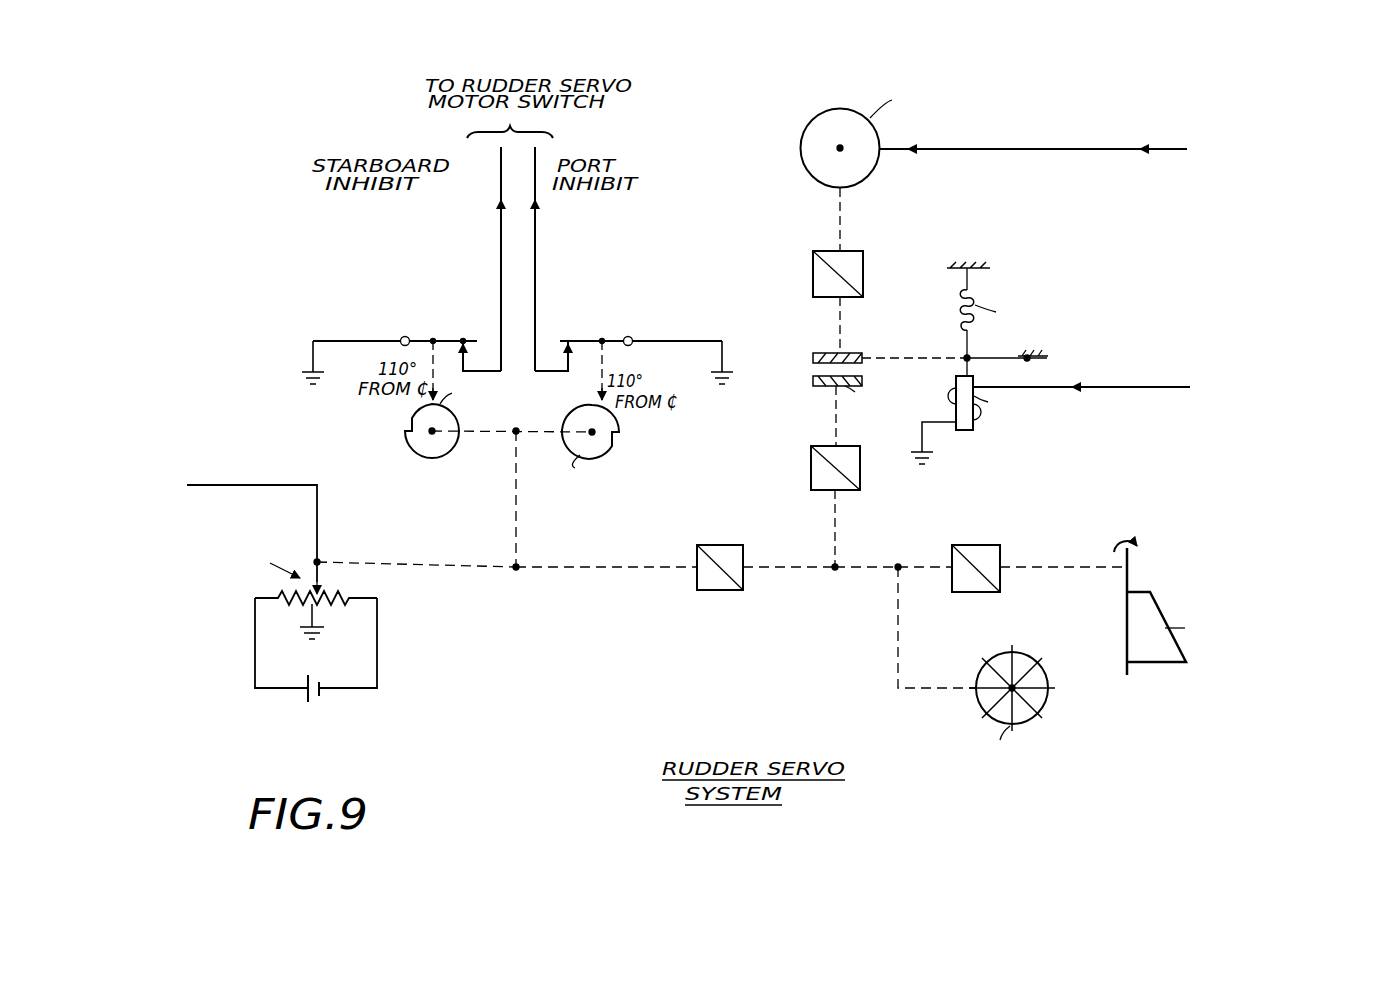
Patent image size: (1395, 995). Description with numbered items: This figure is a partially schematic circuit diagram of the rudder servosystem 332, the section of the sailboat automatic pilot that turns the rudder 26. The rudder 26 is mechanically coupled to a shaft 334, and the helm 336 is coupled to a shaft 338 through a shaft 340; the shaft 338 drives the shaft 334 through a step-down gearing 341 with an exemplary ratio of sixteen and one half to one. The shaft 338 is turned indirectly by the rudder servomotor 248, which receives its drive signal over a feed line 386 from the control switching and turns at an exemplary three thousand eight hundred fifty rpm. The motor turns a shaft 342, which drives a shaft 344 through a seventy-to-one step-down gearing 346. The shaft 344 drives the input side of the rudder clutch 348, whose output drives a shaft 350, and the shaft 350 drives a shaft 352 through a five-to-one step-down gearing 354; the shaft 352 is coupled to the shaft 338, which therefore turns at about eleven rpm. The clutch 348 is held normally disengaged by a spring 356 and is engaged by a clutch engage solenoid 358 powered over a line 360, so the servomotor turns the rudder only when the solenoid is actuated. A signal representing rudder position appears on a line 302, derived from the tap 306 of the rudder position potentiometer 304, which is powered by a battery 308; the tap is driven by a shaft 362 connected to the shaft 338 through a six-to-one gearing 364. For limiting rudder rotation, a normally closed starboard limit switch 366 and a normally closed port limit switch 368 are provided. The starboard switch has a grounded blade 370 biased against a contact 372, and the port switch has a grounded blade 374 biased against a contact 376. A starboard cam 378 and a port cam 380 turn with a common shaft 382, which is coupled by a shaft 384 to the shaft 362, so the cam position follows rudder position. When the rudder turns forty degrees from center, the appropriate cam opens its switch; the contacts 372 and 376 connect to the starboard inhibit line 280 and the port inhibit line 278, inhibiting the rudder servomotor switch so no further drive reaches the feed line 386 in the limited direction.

The rudder 26 is at (1126, 612).
The rudder servomotor 248 is at (880, 135).
The port inhibit line 278 is at (536, 251).
The starboard inhibit line 280 is at (500, 256).
The line 302 is at (200, 487).
The rudder position potentiometer 304 is at (264, 562).
The tap 306 is at (320, 577).
The battery 308 is at (320, 702).
The rudder servosystem 332 is at (700, 237).
The shaft 334 is at (1068, 566).
The helm 336 is at (1045, 678).
The shaft 338 is at (914, 565).
The shaft 340 is at (897, 661).
The step-down gearing 341 is at (996, 533).
The shaft 342 is at (840, 217).
The shaft 344 is at (836, 318).
The step-down gearing 346 is at (818, 300).
The rudder clutch 348 is at (810, 372).
The shaft 350 is at (830, 408).
The shaft 352 is at (834, 530).
The step-down gearing 354 is at (862, 475).
The spring 356 is at (962, 296).
The clutch engage solenoid 358 is at (966, 432).
The line 360 is at (1156, 386).
The shaft 362 is at (452, 572).
The gearing 364 is at (740, 532).
The starboard limit switch 366 is at (480, 331).
The port limit switch 368 is at (572, 336).
The blade 370 is at (445, 370).
The contact 372 is at (482, 356).
The blade 374 is at (586, 346).
The contact 376 is at (551, 356).
The starboard cam 378 is at (460, 458).
The port cam 380 is at (620, 441).
The common shaft 382 is at (522, 437).
The shaft 384 is at (520, 542).
The feed line 386 is at (1066, 152).